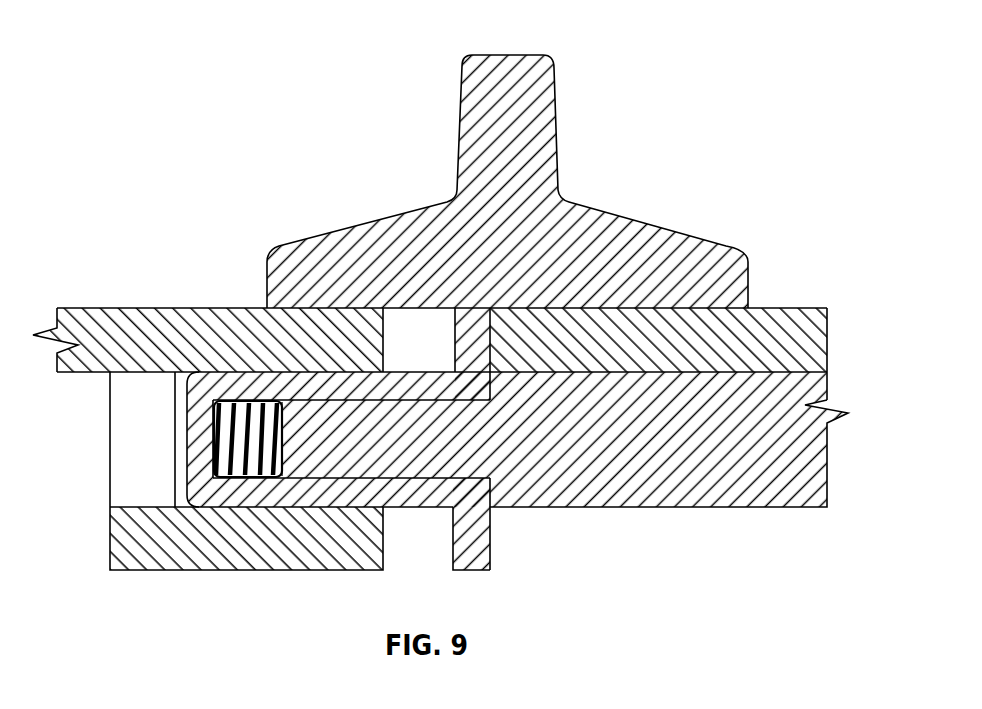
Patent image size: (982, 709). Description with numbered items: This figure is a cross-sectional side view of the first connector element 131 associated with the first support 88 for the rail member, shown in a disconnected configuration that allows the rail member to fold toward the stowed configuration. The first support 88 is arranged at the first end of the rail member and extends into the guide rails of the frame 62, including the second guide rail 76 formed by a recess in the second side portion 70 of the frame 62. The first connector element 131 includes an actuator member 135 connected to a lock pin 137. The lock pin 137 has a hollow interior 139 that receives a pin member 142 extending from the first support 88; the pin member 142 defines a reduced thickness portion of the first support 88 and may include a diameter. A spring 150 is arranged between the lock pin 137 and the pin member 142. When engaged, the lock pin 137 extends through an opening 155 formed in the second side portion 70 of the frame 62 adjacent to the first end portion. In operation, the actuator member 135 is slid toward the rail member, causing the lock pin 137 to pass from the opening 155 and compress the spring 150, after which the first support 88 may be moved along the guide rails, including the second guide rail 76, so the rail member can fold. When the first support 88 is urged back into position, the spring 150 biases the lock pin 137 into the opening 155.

The first connector element 131 is at (263, 65).
The actuator member 135 is at (522, 103).
The lock pin 137 is at (277, 393).
The frame 62 is at (206, 303).
The second side portion 70 is at (123, 330).
The opening 155 is at (133, 373).
The spring 150 is at (230, 436).
The second guide rail 76 is at (185, 497).
The hollow interior 139 is at (303, 468).
The pin member 142 is at (372, 448).
The first support 88 is at (710, 458).